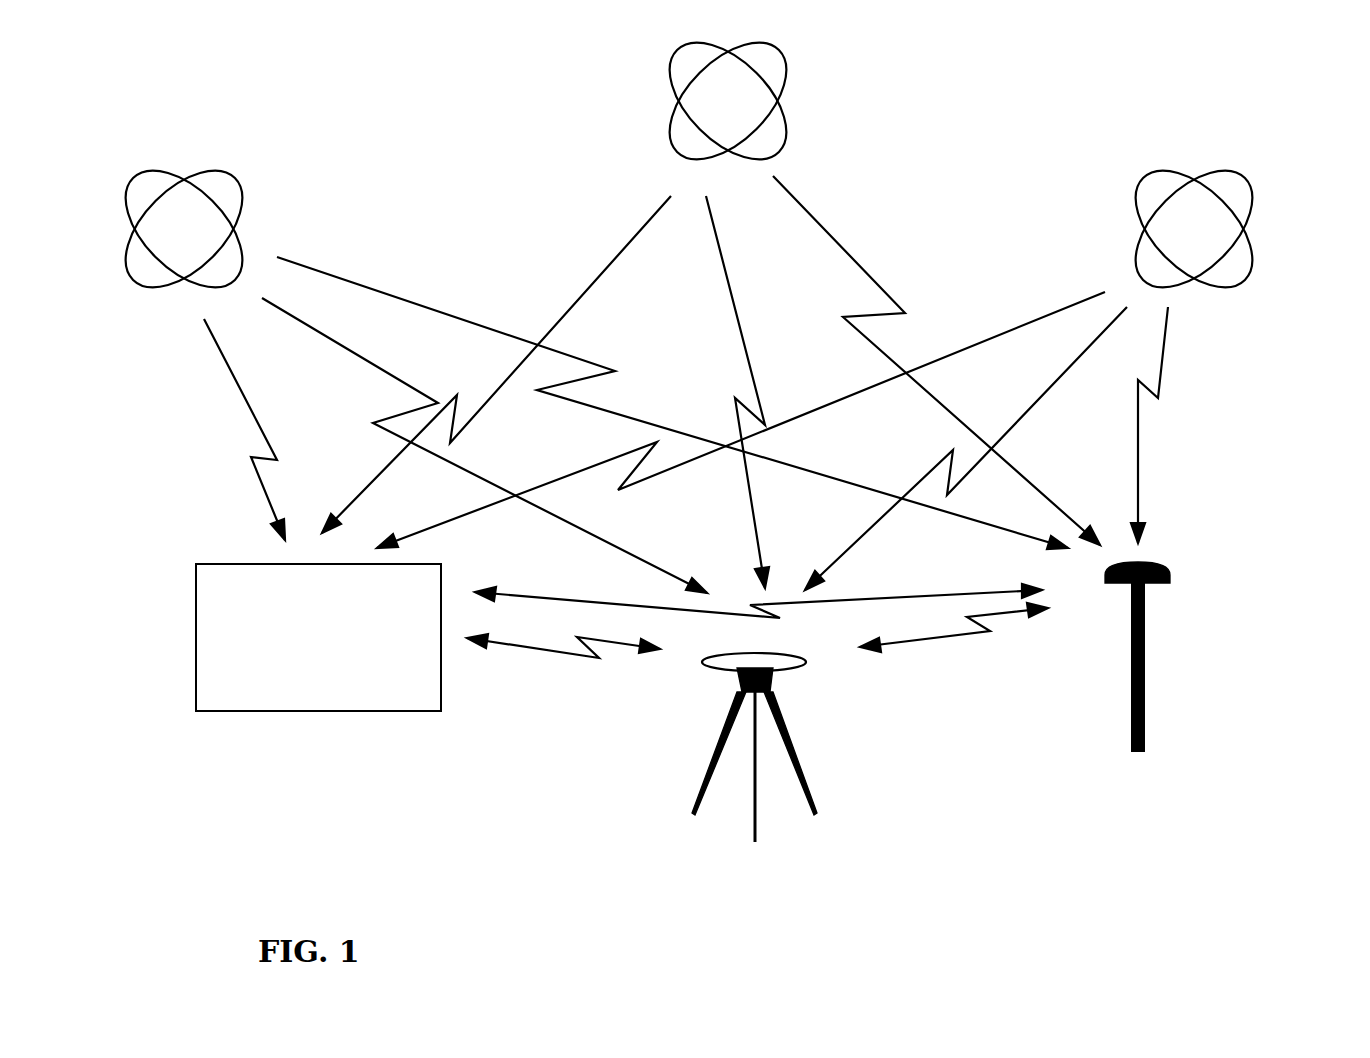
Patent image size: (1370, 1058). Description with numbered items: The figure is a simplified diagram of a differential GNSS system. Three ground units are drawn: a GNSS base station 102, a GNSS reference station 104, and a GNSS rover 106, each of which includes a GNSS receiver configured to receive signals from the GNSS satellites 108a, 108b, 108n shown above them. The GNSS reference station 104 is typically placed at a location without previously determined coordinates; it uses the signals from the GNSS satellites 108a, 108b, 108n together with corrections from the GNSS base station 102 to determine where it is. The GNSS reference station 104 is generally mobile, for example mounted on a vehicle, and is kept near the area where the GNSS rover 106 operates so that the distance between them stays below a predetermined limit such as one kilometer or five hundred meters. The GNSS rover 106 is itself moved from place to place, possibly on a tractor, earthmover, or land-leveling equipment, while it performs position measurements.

The GNSS base station 102 is at (277, 711).
The GNSS reference station 104 is at (715, 750).
The GNSS rover 106 is at (1146, 668).
The GNSS satellite 108a is at (235, 177).
The GNSS satellite 108b is at (672, 52).
The GNSS satellite 108n is at (1243, 177).